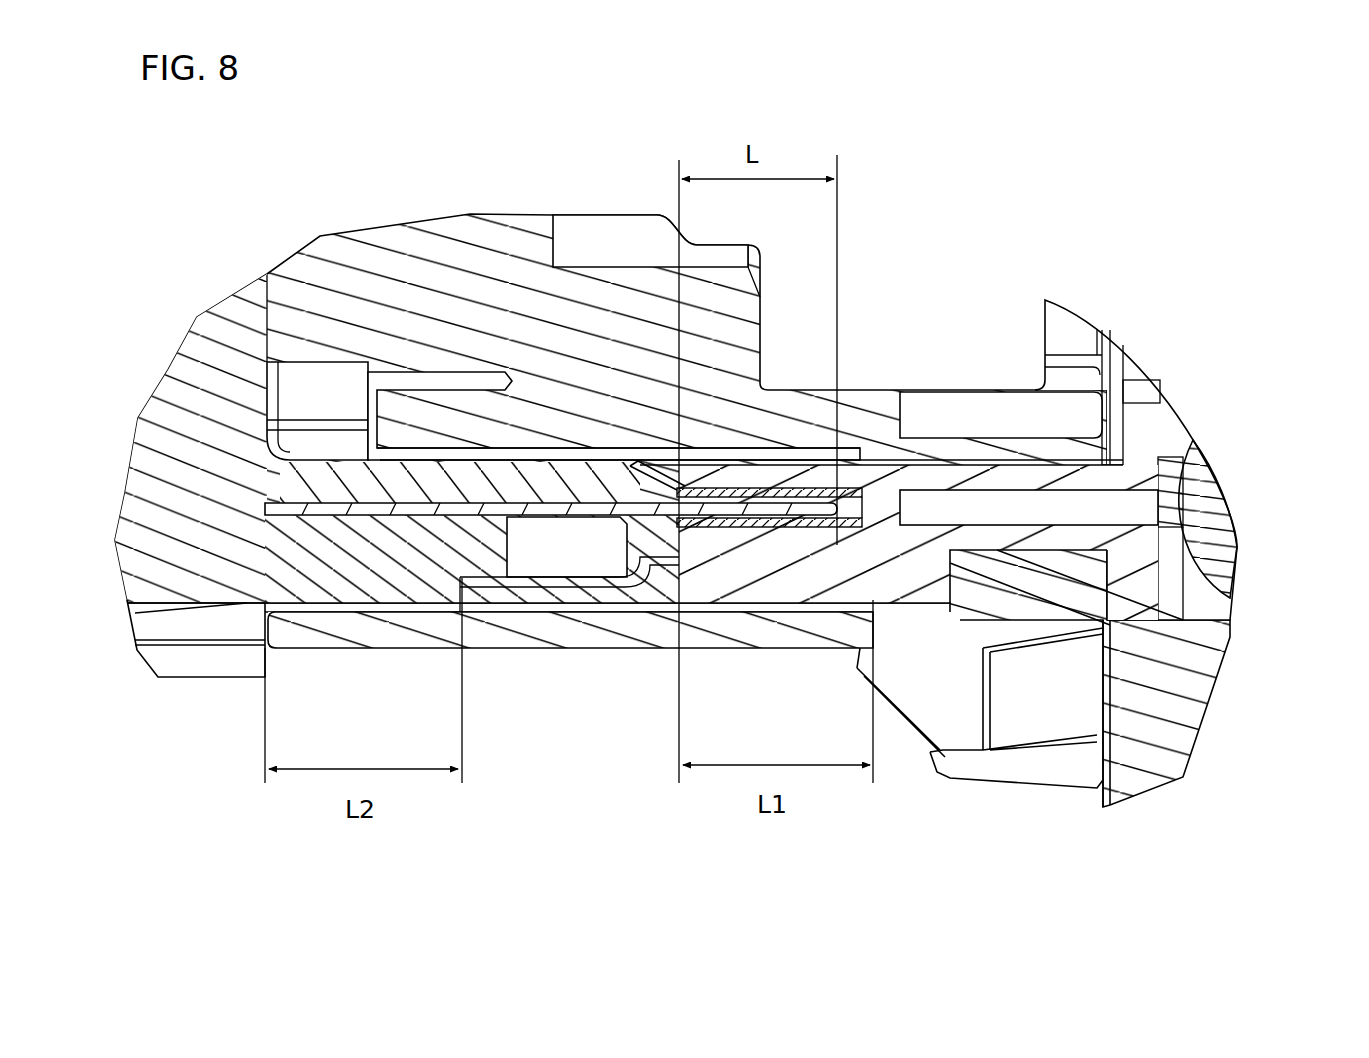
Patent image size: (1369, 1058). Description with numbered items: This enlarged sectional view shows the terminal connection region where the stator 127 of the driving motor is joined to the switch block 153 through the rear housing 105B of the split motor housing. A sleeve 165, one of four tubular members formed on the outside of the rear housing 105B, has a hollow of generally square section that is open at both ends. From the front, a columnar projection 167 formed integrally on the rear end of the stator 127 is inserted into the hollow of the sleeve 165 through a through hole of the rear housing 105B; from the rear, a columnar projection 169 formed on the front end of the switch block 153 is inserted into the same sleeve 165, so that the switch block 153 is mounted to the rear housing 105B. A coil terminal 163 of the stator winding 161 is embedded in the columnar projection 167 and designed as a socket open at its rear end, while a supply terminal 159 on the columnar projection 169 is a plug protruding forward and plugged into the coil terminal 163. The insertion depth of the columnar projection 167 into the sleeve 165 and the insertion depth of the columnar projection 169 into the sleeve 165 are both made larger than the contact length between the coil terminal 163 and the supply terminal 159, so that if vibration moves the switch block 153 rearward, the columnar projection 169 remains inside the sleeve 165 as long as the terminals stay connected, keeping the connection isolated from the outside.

The rear housing 105B is at (490, 205).
The switch block 153 is at (166, 364).
The coil terminal 163 is at (850, 488).
The stator 127 is at (1172, 430).
The stator winding 161 is at (1224, 510).
The columnar projection 169 is at (483, 566).
The sleeve 165 is at (590, 640).
The supply terminal 159 is at (555, 518).
The columnar projection 167 is at (690, 580).